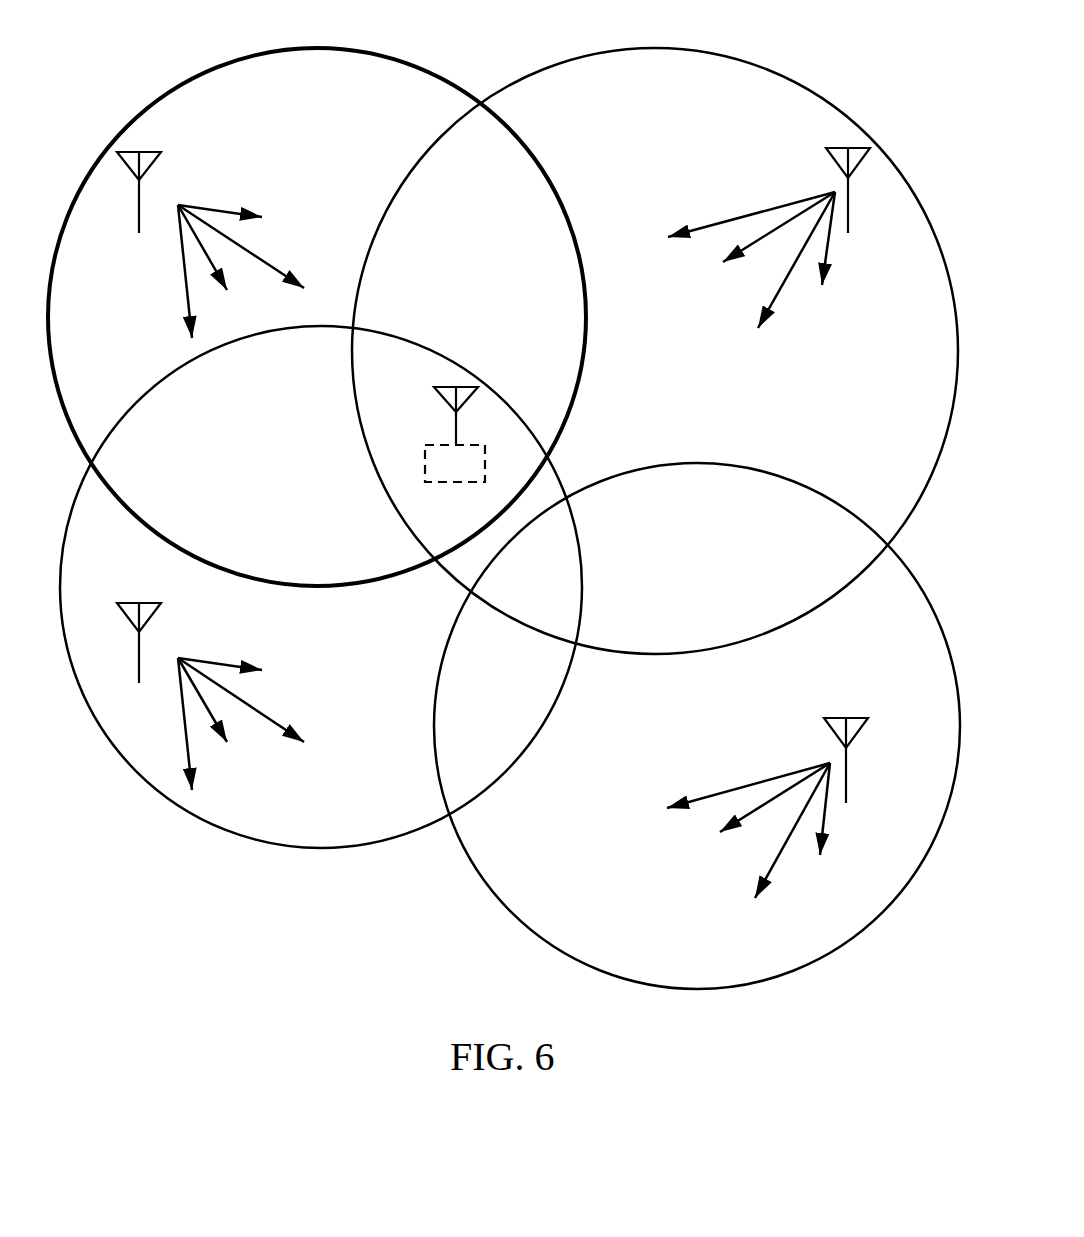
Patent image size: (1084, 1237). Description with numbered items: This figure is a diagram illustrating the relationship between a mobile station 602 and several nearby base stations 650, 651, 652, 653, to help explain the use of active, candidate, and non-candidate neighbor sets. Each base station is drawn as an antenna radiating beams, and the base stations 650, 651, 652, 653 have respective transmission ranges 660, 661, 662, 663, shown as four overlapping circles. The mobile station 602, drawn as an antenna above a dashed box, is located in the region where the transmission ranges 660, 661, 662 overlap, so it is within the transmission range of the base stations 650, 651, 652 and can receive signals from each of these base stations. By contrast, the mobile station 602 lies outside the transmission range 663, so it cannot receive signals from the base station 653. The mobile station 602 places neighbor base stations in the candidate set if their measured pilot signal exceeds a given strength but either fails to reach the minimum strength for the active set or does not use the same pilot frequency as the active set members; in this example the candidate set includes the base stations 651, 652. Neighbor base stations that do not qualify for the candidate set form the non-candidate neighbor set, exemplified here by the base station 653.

The transmission range 660 is at (333, 50).
The transmission range 661 is at (322, 848).
The transmission range 662 is at (706, 50).
The transmission range 663 is at (755, 988).
The base station 650 is at (184, 266).
The base station 651 is at (184, 720).
The base station 652 is at (769, 208).
The base station 653 is at (767, 780).
The mobile station 602 is at (441, 483).